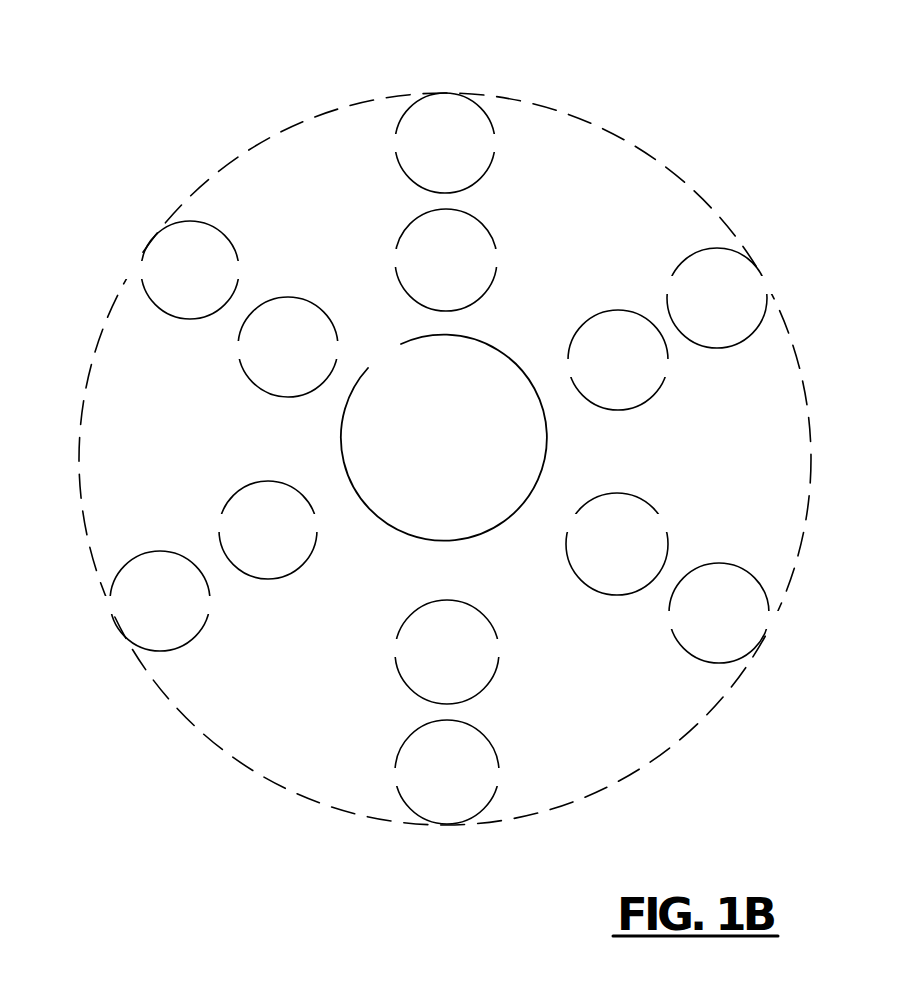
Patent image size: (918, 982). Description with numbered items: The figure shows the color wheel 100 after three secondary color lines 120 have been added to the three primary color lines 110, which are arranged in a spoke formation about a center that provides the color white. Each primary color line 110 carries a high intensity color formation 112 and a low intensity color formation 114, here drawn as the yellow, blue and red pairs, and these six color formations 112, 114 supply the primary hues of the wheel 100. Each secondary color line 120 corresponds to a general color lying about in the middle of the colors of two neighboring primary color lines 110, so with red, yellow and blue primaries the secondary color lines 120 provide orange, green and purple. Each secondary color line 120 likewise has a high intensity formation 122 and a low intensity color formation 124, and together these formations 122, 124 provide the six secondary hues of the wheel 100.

The color wheel 100 is at (438, 442).
The primary color line 110 is at (444, 66).
The high intensity color formation 112 is at (487, 224).
The low intensity color formation 114 is at (463, 96).
The secondary color line 120 is at (454, 465).
The high intensity formation 122 is at (318, 392).
The low intensity color formation 124 is at (693, 254).